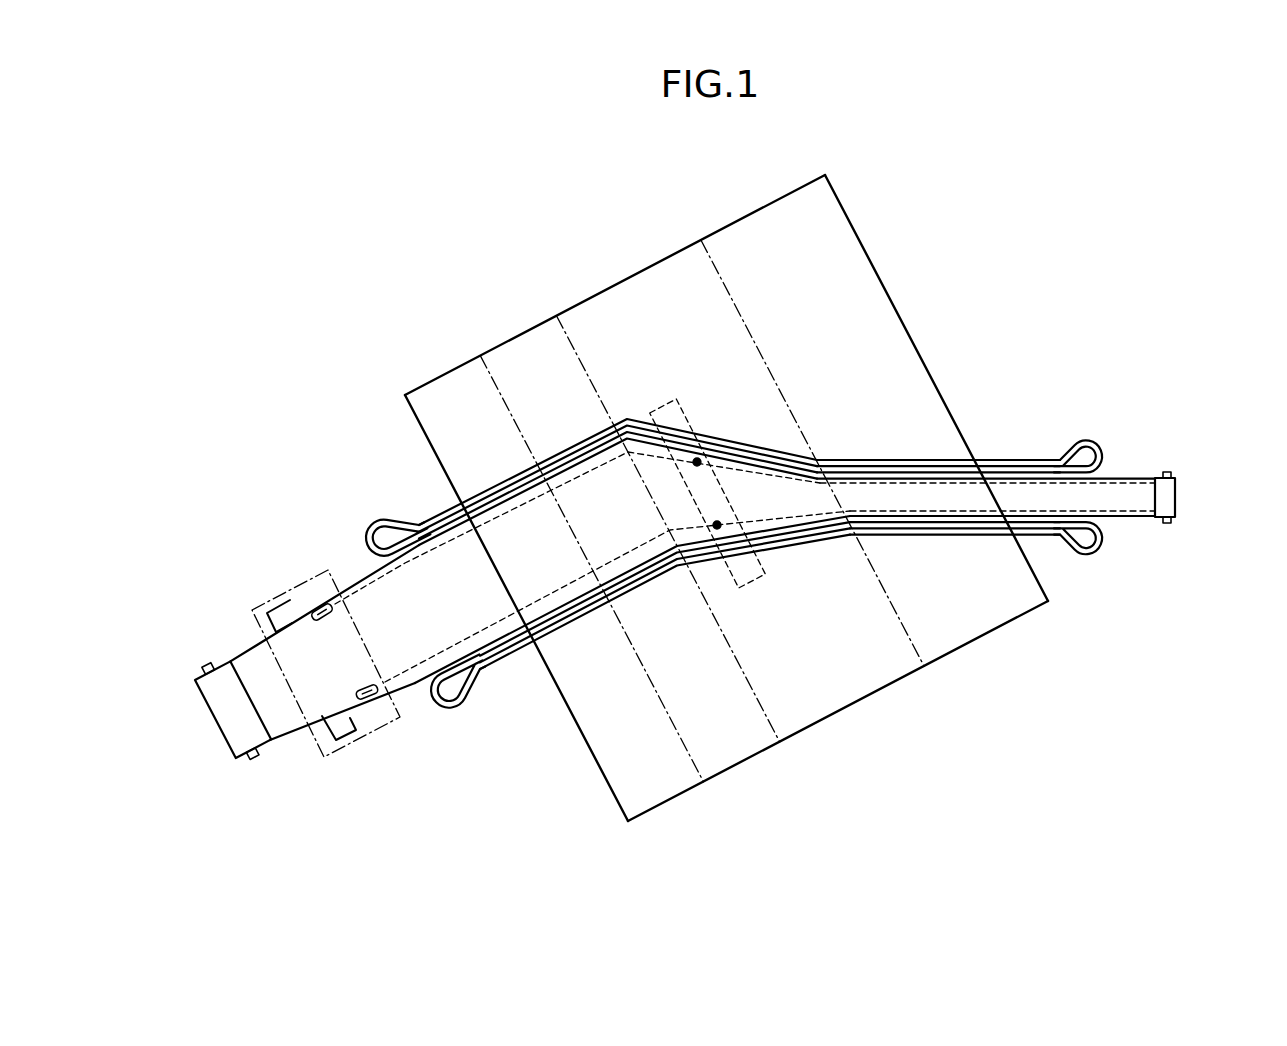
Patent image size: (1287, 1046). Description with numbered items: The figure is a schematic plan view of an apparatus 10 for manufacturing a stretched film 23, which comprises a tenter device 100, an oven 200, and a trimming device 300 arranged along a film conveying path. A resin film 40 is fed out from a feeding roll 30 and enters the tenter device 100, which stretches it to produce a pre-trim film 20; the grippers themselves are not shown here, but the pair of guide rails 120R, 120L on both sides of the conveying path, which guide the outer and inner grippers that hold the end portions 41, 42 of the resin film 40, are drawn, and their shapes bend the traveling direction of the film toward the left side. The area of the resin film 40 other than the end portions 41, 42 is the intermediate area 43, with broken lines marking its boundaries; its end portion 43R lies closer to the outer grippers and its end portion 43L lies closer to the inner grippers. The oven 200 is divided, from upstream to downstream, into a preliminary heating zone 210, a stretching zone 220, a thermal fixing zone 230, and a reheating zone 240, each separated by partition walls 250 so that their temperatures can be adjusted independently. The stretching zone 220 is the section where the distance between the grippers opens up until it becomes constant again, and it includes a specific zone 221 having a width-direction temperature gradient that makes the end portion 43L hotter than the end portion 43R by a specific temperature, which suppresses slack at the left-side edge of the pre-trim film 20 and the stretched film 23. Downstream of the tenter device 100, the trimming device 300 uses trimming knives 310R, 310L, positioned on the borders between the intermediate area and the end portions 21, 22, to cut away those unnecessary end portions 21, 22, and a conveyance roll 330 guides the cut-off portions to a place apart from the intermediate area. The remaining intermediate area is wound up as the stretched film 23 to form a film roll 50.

The apparatus for manufacturing a stretched film 10 is at (937, 162).
The pre-trim film 20 is at (470, 622).
The end portion of the pre-trim film 21 is at (362, 584).
The end portion of the pre-trim film 22 is at (413, 682).
The stretched film 23 is at (291, 723).
The feeding roll 30 is at (1178, 494).
The resin film 40 is at (1133, 480).
The end portion of the resin film 41 is at (572, 440).
The end portion of the resin film 42 is at (647, 577).
The intermediate area of the resin film 43 is at (600, 535).
The end portion of the intermediate area 43R is at (697, 458).
The end portion of the intermediate area 43L is at (730, 545).
The film roll 50 is at (227, 718).
The tenter device 100 is at (1008, 455).
The guide rail 120R is at (1090, 438).
The guide rail 120L is at (1093, 560).
The oven 200 is at (597, 293).
The preliminary heating zone 210 is at (777, 212).
The stretching zone 220 is at (660, 272).
The specific zone 221 is at (652, 406).
The thermal fixing zone 230 is at (527, 340).
The reheating zone 240 is at (447, 380).
The partition wall 250 is at (927, 668).
The trimming device 300 is at (283, 586).
The trimming knife 310R is at (323, 606).
The trimming knife 310L is at (375, 705).
The conveyance roll 330 is at (350, 740).